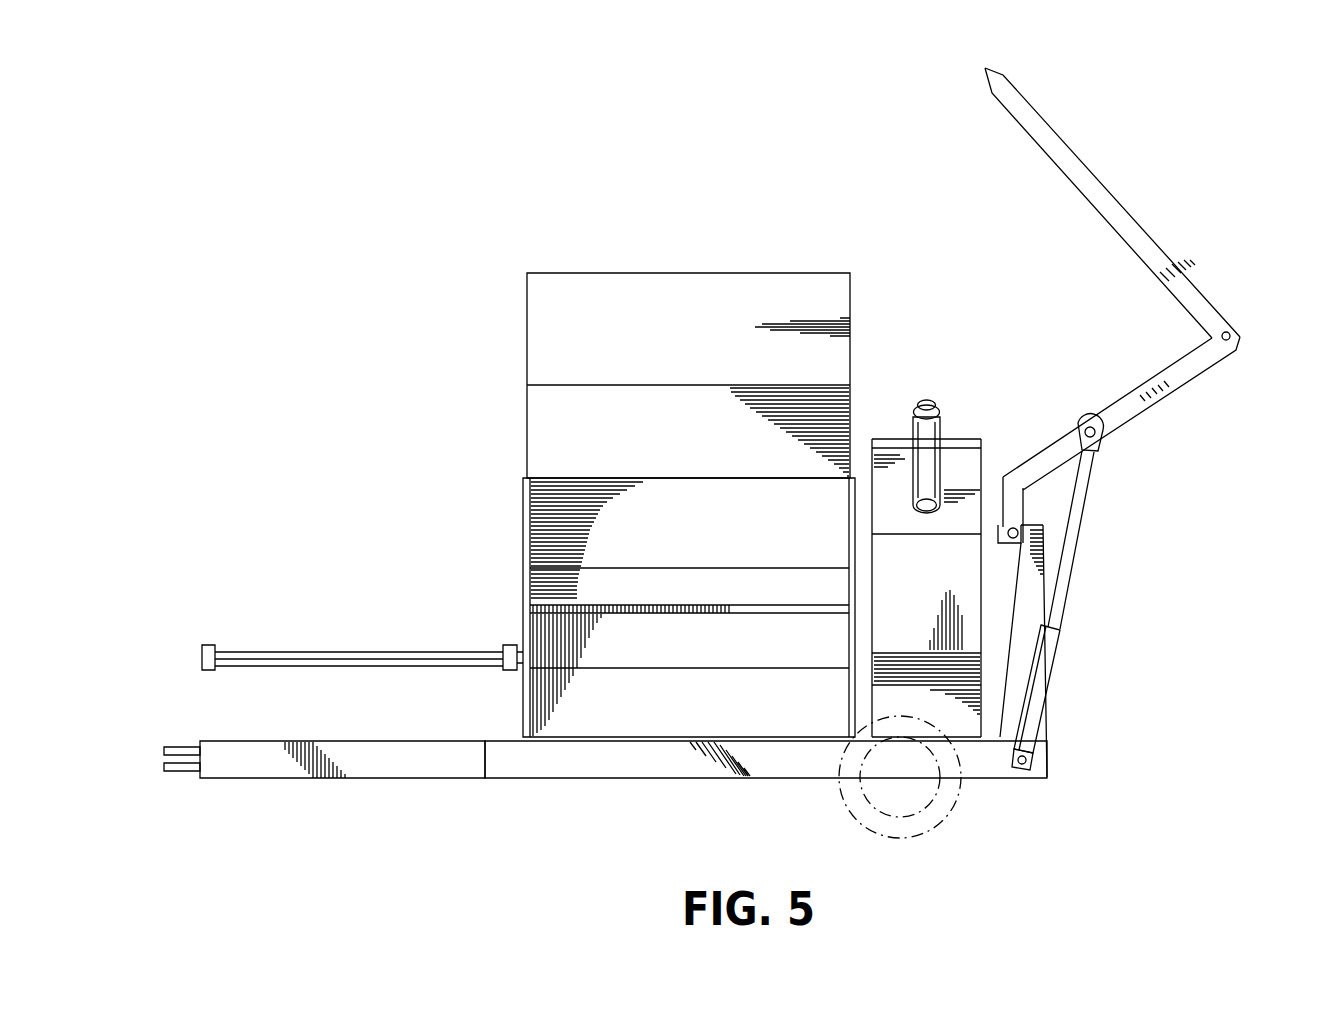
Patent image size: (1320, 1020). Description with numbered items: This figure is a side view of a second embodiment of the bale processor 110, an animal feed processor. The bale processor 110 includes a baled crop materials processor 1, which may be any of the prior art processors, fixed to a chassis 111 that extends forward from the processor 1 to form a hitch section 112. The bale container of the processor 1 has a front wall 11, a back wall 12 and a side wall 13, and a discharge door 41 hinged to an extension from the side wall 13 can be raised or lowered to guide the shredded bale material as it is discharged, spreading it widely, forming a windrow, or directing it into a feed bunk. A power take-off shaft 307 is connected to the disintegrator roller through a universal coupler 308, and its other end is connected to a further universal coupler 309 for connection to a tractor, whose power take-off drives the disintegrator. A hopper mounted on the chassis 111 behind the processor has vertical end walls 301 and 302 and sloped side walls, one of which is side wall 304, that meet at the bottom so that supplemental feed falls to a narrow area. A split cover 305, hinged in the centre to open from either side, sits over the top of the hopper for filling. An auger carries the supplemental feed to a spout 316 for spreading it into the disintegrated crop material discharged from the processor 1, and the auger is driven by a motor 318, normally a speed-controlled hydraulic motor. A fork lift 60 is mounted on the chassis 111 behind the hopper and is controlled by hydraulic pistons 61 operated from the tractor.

The bale processor 110 is at (602, 212).
The baled crop materials processor 1 is at (671, 256).
The side wall 13 is at (735, 290).
The front wall 11 is at (525, 528).
The back wall 12 is at (857, 556).
The discharge door 41 is at (710, 712).
The vertical end wall 301 is at (858, 460).
The split cover 305 is at (960, 440).
The motor 318 is at (927, 407).
The spout 316 is at (927, 472).
The vertical end wall 302 is at (983, 606).
The fork lift 60 is at (1172, 378).
The hydraulic pistons 61 is at (1040, 675).
The sloped side wall 304 is at (942, 705).
The chassis 111 is at (590, 765).
The hitch section 112 is at (258, 768).
The power take-off shaft 307 is at (340, 653).
The universal coupler 308 is at (505, 645).
The universal coupler 309 is at (208, 645).